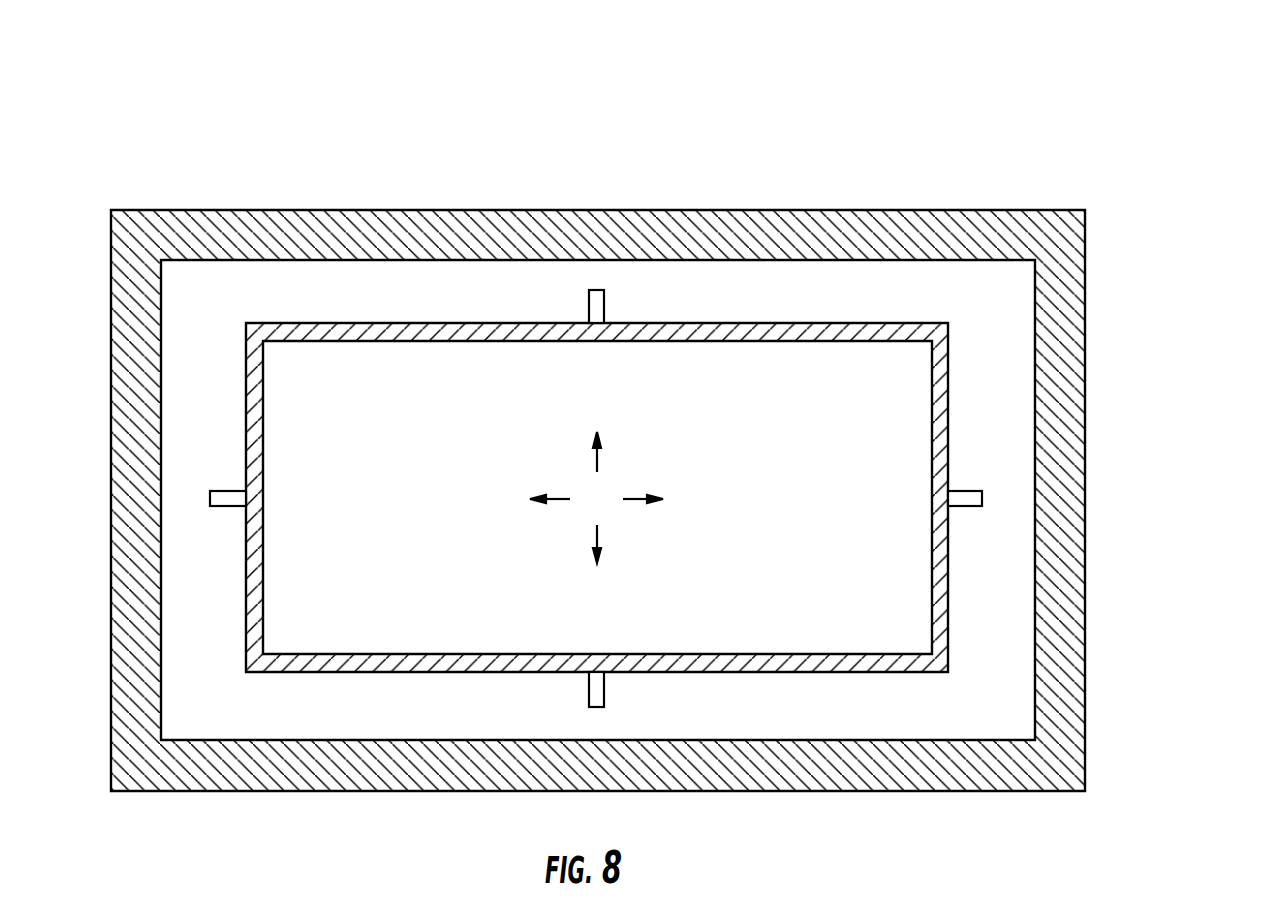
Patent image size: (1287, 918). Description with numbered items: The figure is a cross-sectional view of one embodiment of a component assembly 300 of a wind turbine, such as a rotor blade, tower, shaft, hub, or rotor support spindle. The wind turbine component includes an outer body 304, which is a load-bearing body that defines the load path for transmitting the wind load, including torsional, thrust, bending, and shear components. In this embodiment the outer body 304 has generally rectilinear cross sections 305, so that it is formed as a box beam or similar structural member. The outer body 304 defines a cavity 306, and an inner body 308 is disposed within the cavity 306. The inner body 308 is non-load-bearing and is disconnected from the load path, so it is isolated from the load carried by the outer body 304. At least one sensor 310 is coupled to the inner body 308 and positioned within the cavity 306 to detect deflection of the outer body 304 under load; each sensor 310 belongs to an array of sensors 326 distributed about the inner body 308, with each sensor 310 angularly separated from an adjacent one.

The component assembly 300 is at (1068, 88).
The outer body 304 is at (905, 222).
The generally rectilinear cross sections 305 is at (1188, 395).
The cavity 306 is at (834, 602).
The inner body 308 is at (872, 335).
The sensor 310 is at (967, 497).
The array of sensors 326 is at (596, 497).